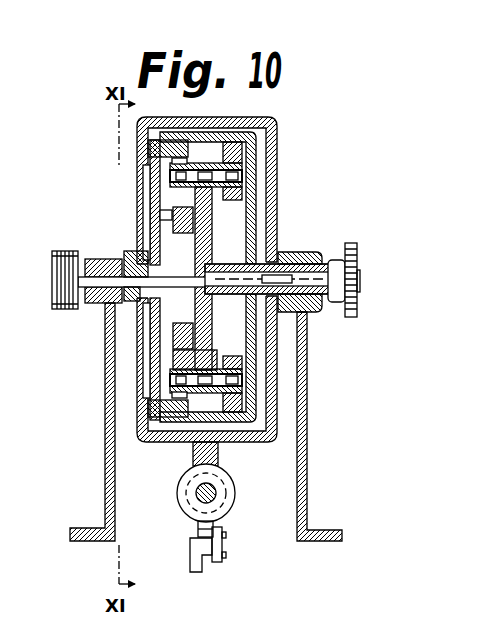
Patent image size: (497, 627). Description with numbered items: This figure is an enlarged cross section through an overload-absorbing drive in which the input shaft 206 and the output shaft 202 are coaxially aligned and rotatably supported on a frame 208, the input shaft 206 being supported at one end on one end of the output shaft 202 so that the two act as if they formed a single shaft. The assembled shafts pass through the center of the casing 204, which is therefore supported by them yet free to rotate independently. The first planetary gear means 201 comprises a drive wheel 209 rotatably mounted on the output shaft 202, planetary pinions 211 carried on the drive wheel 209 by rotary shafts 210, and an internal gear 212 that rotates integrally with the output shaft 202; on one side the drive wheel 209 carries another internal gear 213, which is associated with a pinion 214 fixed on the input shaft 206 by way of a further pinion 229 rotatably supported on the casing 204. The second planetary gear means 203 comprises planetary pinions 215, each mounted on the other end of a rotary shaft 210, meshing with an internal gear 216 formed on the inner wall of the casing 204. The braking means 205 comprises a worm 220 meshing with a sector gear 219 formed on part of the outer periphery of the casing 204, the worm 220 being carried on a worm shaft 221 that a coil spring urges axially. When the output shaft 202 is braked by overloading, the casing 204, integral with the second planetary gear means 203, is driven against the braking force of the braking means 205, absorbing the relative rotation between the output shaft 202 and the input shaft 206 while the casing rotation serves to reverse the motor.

The first planetary gear means 201 is at (225, 218).
The output shaft 202 is at (333, 262).
The second planetary gear means 203 is at (170, 185).
The casing 204 is at (138, 150).
The braking means 205 is at (182, 503).
The input shaft 206 is at (100, 301).
The frame 208 is at (105, 382).
The drive wheel 209 is at (273, 337).
The rotary shafts 210 is at (209, 172).
The planetary pinions 211 is at (243, 190).
The internal gear 212 is at (251, 233).
The internal gear 213 is at (158, 212).
The pinion 214 is at (138, 308).
The planetary pinions 215 is at (156, 166).
The internal gear 216 is at (163, 155).
The sector gear 219 is at (219, 453).
The worm 220 is at (224, 504).
The worm shaft 221 is at (212, 495).
The pinion 229 is at (150, 262).